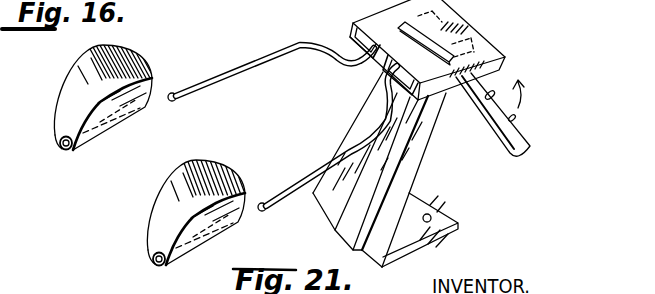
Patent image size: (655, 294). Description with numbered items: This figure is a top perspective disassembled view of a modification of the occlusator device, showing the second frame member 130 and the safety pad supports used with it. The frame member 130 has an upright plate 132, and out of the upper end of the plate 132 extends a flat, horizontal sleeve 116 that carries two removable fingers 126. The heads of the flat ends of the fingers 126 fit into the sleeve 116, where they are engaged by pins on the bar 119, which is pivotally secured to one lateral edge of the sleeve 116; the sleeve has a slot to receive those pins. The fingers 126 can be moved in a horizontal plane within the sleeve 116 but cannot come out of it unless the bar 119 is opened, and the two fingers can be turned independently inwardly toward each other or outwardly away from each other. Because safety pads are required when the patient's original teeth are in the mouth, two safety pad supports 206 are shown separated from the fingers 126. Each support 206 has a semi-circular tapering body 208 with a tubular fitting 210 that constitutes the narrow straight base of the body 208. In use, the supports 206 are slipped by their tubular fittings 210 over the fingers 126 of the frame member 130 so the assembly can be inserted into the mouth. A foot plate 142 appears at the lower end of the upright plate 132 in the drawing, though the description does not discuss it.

The safety pad support 206 is at (165, 59).
The semi-circular tapering body 208 is at (73, 89).
The tubular fitting 210 is at (59, 150).
The removable finger 126 is at (250, 72).
The flat horizontal sleeve 116 is at (460, 33).
The bar 119 is at (517, 138).
The second frame member 130 is at (466, 174).
The upright plate 132 is at (424, 189).
The foot plate 142 is at (450, 213).